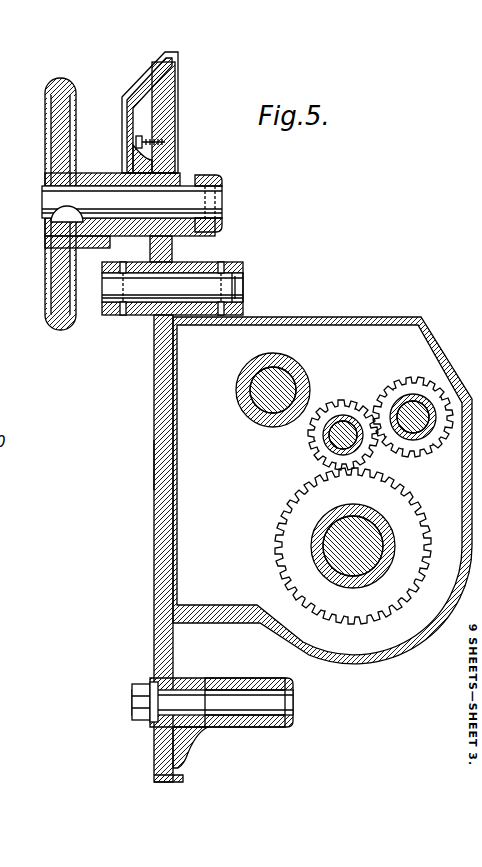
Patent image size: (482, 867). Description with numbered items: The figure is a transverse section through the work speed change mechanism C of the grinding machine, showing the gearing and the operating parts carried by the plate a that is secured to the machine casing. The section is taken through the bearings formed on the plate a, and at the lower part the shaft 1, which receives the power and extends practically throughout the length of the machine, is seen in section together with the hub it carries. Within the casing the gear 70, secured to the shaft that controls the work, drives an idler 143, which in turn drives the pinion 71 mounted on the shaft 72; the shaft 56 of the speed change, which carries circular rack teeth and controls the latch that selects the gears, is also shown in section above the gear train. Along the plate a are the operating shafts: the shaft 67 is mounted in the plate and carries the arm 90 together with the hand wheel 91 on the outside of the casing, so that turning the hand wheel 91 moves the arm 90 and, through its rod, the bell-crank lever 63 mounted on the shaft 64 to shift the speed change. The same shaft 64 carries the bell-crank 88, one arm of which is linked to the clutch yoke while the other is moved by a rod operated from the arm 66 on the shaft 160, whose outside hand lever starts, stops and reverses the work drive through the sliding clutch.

The hand wheel 91 is at (47, 159).
The shaft 67 is at (227, 193).
The arm 90 is at (213, 232).
The shaft 160 is at (254, 280).
The arm 66 is at (243, 306).
The work speed change mechanism C is at (298, 490).
The plate a is at (155, 463).
The shaft 56 is at (262, 400).
The idler 143 is at (312, 448).
The pinion 71 is at (420, 452).
The shaft 72 is at (412, 410).
The gear 70 is at (290, 545).
The shaft 1 is at (323, 566).
The shaft 64 is at (293, 700).
The bell-crank 88 is at (265, 728).
The bell-crank lever 63 is at (227, 728).